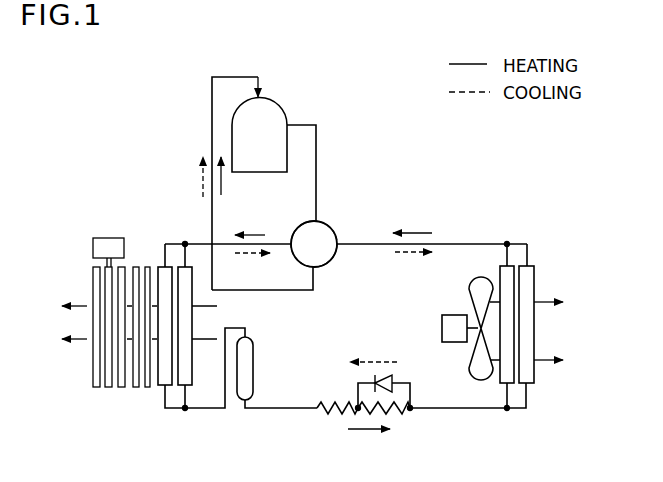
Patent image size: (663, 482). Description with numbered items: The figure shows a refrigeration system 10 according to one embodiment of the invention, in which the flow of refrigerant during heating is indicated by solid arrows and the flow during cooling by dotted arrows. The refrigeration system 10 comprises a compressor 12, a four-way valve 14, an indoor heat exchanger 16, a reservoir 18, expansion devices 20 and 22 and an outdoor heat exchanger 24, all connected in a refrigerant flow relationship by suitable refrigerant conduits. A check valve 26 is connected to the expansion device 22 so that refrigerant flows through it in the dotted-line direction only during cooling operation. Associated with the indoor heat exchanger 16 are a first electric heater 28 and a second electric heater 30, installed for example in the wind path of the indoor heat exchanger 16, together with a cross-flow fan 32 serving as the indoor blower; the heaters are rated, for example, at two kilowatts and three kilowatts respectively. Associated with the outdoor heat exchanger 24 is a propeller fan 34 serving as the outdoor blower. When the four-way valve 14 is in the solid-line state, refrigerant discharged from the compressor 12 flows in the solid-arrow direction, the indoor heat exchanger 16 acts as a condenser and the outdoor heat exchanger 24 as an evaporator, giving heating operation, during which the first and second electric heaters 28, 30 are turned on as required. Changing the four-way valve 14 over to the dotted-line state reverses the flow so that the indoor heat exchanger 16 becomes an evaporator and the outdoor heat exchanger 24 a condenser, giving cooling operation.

The refrigeration system 10 is at (156, 124).
The compressor 12 is at (272, 112).
The four-way valve 14 is at (333, 224).
The indoor heat exchanger 16 is at (160, 383).
The reservoir 18 is at (245, 398).
The expansion device 20 is at (332, 415).
The expansion device 22 is at (393, 415).
The outdoor heat exchanger 24 is at (510, 385).
The check valve 26 is at (387, 377).
The first electric heater 28 is at (147, 267).
The second electric heater 30 is at (135, 267).
The cross-flow fan 32 is at (103, 246).
The propeller fan 34 is at (481, 280).